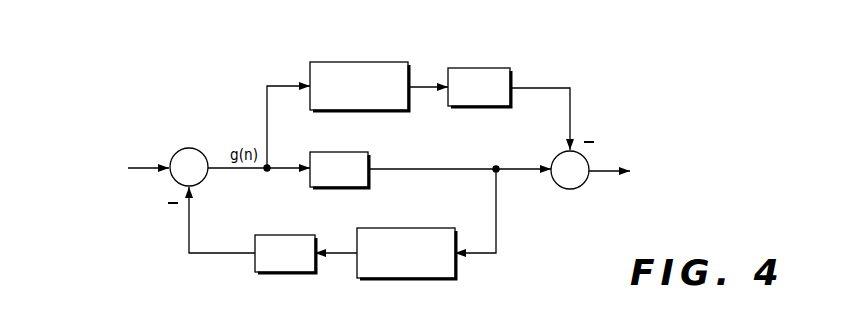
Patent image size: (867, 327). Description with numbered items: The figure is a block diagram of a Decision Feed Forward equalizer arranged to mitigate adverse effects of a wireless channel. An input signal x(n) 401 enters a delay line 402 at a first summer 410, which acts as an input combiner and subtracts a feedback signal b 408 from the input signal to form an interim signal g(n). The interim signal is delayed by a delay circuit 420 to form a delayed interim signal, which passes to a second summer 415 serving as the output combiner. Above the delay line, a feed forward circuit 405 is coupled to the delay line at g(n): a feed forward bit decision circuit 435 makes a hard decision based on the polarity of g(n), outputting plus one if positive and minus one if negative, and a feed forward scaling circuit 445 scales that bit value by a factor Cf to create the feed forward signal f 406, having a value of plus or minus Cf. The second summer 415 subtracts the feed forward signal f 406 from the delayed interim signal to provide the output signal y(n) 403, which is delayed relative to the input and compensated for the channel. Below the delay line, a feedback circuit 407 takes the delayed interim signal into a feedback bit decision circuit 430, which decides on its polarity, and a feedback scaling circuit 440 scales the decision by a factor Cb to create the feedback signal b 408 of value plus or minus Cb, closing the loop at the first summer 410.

The input signal x(n) 401 is at (96, 158).
The delay line 402 is at (513, 197).
The output signal y(n) 403 is at (668, 163).
The feed forward circuit 405 is at (438, 60).
The feed forward signal f 406 is at (590, 108).
The feedback circuit 407 is at (338, 279).
The feedback signal b 408 is at (172, 256).
The first summer 410 is at (203, 180).
The second summer 415 is at (582, 188).
The delay circuit 420 is at (355, 152).
The feedback bit decision circuit 430 is at (425, 229).
The feed forward bit decision circuit 435 is at (378, 62).
The feedback scaling circuit 440 is at (275, 235).
The feed forward scaling circuit 445 is at (500, 69).